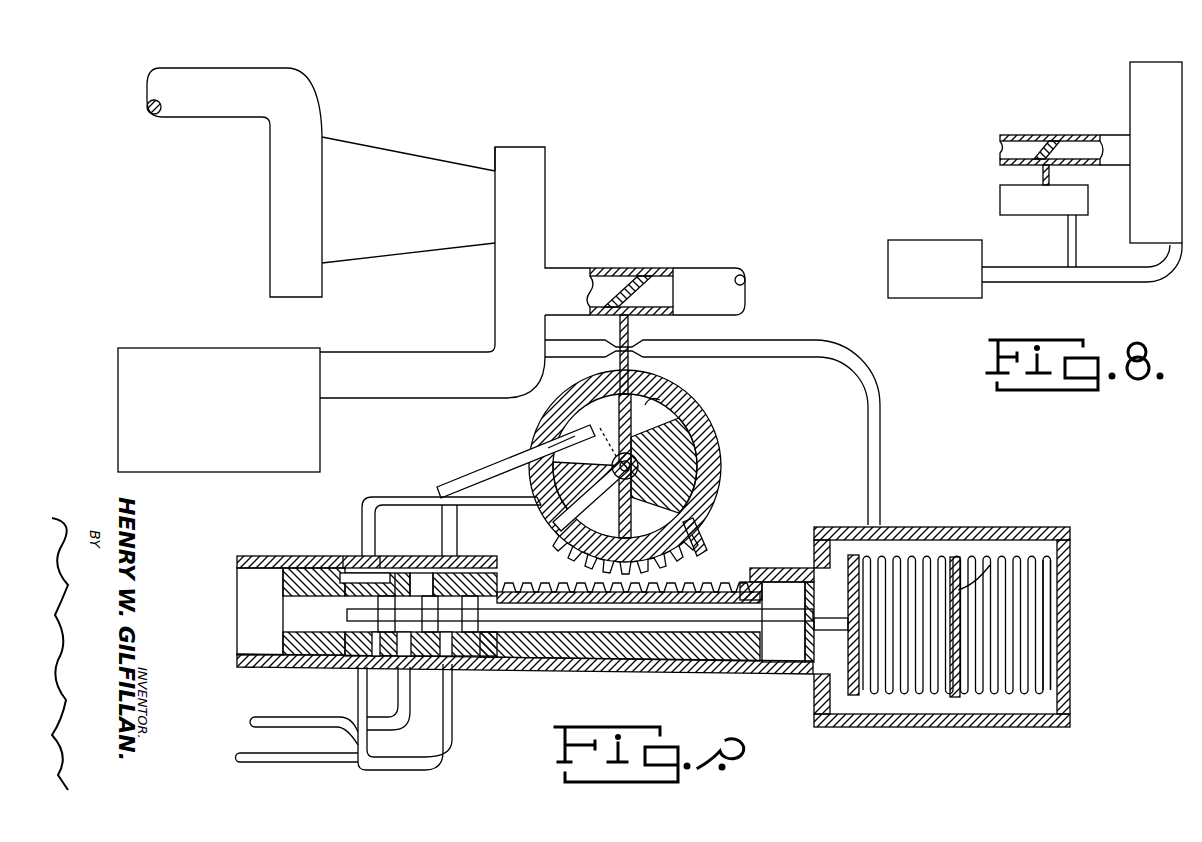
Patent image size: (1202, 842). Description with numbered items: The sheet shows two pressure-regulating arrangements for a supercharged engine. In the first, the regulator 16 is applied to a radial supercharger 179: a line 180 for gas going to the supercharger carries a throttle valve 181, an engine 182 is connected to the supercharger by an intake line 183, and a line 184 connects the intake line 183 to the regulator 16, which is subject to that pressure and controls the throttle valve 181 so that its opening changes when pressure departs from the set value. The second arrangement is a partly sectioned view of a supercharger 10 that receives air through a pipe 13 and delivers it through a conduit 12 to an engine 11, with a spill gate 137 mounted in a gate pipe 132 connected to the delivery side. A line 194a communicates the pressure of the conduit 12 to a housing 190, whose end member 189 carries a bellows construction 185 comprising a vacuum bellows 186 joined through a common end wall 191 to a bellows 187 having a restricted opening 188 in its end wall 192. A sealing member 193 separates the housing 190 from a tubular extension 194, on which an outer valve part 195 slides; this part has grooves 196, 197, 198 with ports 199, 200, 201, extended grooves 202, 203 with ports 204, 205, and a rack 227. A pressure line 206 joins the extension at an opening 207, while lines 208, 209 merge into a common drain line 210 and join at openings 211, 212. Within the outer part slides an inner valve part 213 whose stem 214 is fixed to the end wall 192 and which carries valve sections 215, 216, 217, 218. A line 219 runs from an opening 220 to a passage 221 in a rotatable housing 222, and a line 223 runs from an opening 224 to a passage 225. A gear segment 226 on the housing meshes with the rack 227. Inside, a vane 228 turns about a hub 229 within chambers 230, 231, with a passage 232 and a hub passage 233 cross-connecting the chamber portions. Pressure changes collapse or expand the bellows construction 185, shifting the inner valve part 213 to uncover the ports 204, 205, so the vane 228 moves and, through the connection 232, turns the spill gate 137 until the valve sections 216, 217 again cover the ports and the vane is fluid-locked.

In FIG. 9, the pipe 13 is at (216, 103).
In FIG. 9, the supercharger 10 is at (388, 187).
In FIG. 9, the engine 11 is at (212, 375).
In FIG. 9, the conduit 12 is at (383, 376).
In FIG. 9, the fuel pipe 132 is at (553, 283).
In FIG. 9, the spill gate 137 is at (650, 283).
In FIG. 9, the passage 232 is at (630, 330).
In FIG. 9, the line 194a is at (762, 357).
In FIG. 9, the rotatable housing 222 is at (708, 450).
In FIG. 9, the chamber 230 is at (660, 402).
In FIG. 9, the vane 228 is at (668, 416).
In FIG. 9, the passage 233 is at (596, 434).
In FIG. 9, the line 223 is at (508, 472).
In FIG. 9, the passage 225 is at (532, 460).
In FIG. 9, the hub 229 is at (558, 528).
In FIG. 9, the chamber 231 is at (670, 512).
In FIG. 9, the gear segment 226 is at (694, 548).
In FIG. 9, the rack 227 is at (724, 582).
In FIG. 9, the valve section 215 is at (478, 605).
In FIG. 9, the stem 214 is at (622, 626).
In FIG. 9, the inner valve part 213 is at (571, 628).
In FIG. 9, the port 205 is at (296, 560).
In FIG. 9, the outer valve part 195 is at (676, 660).
In FIG. 9, the tubular extension 194 is at (725, 664).
In FIG. 9, the valve section 218 is at (345, 605).
In FIG. 9, the valve section 217 is at (392, 605).
In FIG. 9, the valve section 216 is at (434, 605).
In FIG. 9, the port 204 is at (468, 568).
In FIG. 9, the line 219 is at (375, 510).
In FIG. 9, the opening 224 is at (458, 556).
In FIG. 9, the passage 221 is at (545, 492).
In FIG. 9, the opening 220 is at (350, 540).
In FIG. 9, the extended groove 203 is at (380, 530).
In FIG. 9, the extended groove 202 is at (433, 572).
In FIG. 9, the line 208 is at (362, 768).
In FIG. 9, the line 209 is at (453, 732).
In FIG. 9, the pressure line 206 is at (322, 728).
In FIG. 9, the common drain line 210 is at (284, 768).
In FIG. 9, the port 200 is at (398, 700).
In FIG. 9, the opening 212 is at (450, 708).
In FIG. 9, the opening 207 is at (424, 689).
In FIG. 9, the port 201 is at (352, 648).
In FIG. 9, the groove 198 is at (345, 665).
In FIG. 9, the opening 211 is at (365, 670).
In FIG. 9, the groove 197 is at (378, 690).
In FIG. 9, the groove 196 is at (448, 670).
In FIG. 9, the port 199 is at (455, 685).
In FIG. 9, the sealing member 193 is at (805, 650).
In FIG. 9, the end wall 192 is at (808, 672).
In FIG. 9, the housing 190 is at (850, 727).
In FIG. 9, the restricted opening 188 is at (838, 580).
In FIG. 9, the bellows construction 185 is at (950, 556).
In FIG. 9, the bellows 187 is at (930, 695).
In FIG. 9, the bellows 186 is at (985, 695).
In FIG. 9, the common end wall 191 is at (962, 570).
In FIG. 9, the end member 189 is at (1072, 570).
In FIG. 8, the radial supercharger 179 is at (1155, 82).
In FIG. 8, the intake line 183 is at (1058, 276).
In FIG. 8, the line 180 is at (1106, 140).
In FIG. 8, the throttle valve 181 is at (1040, 138).
In FIG. 8, the regulator 16 is at (1035, 198).
In FIG. 8, the line 184 is at (1068, 232).
In FIG. 8, the engine 182 is at (955, 272).